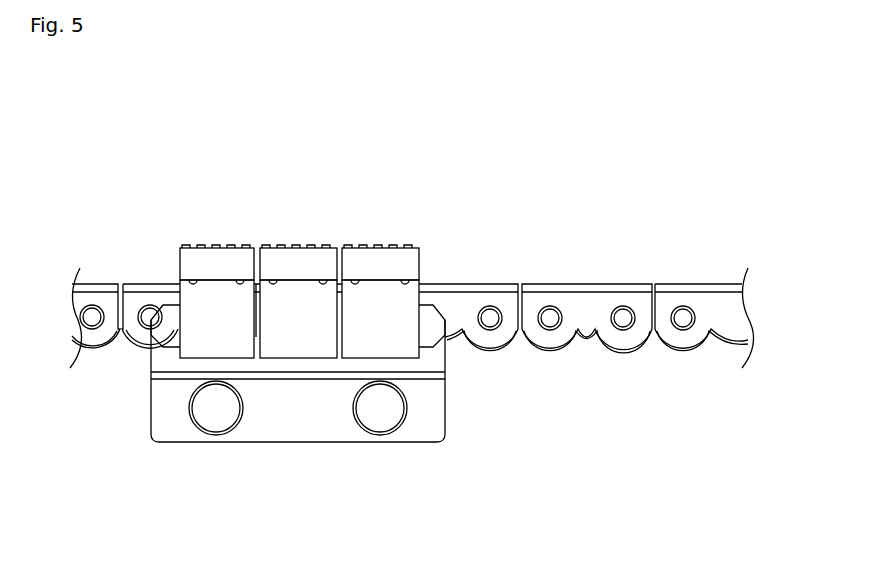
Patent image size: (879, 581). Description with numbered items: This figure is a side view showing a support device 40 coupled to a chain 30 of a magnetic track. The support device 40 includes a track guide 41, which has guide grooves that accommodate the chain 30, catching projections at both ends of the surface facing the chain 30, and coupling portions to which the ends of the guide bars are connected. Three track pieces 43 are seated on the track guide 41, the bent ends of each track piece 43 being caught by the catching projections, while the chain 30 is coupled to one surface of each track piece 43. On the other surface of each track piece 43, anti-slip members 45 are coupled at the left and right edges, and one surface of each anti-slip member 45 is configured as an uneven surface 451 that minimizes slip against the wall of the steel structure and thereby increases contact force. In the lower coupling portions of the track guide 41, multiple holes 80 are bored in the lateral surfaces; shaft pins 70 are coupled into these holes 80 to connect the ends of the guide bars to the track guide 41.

The chain 30 is at (519, 340).
The support device 40 is at (320, 329).
The track guide 41 is at (430, 413).
The track piece 43 is at (398, 307).
The anti-slip member 45 is at (306, 200).
The uneven surface 451 is at (303, 245).
The shaft pin 70 is at (205, 415).
The hole 80 is at (260, 463).